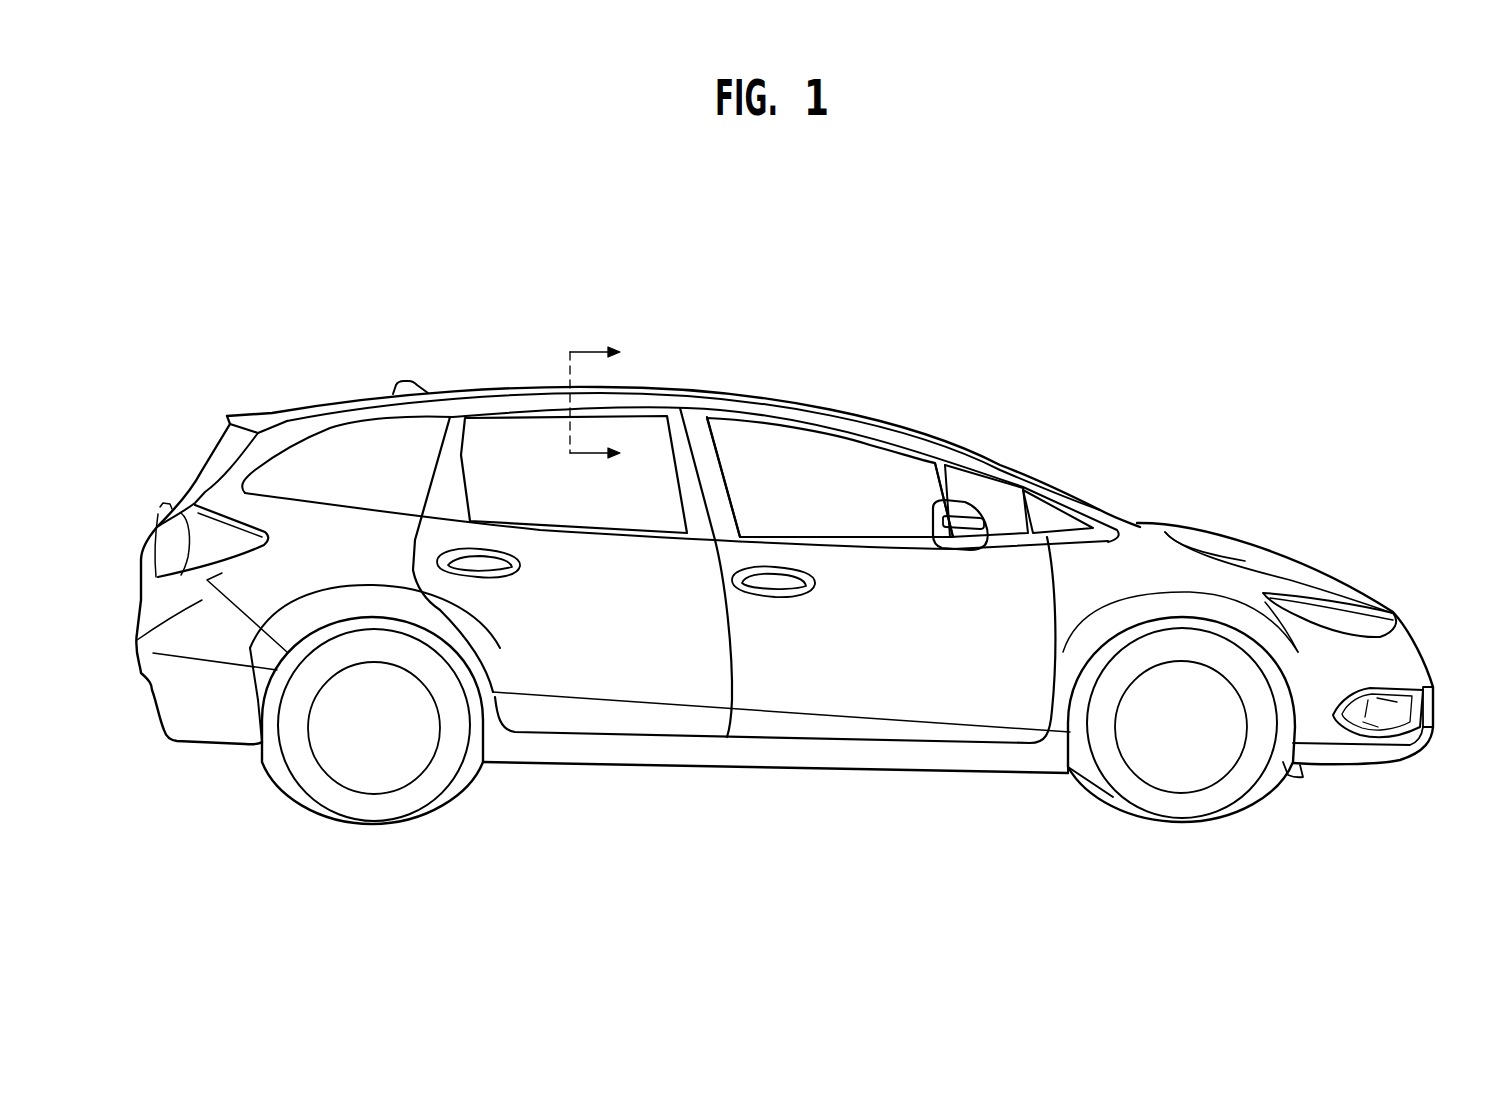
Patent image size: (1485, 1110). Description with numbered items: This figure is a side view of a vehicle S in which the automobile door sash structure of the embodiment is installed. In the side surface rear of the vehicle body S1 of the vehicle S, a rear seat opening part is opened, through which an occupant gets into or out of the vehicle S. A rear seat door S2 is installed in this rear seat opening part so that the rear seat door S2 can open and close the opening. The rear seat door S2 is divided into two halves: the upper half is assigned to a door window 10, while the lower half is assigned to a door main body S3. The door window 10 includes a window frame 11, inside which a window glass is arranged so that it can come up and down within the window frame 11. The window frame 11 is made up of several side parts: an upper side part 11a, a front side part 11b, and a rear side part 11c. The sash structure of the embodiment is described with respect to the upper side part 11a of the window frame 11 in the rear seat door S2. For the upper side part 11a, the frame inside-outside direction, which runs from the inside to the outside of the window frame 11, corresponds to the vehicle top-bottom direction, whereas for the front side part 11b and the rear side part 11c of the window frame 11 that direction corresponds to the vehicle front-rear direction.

The door window 10 is at (481, 408).
The window frame 11 is at (680, 436).
The upper side part of the window frame 11a is at (527, 416).
The front side part of the window frame 11b is at (690, 487).
The rear side part of the window frame 11c is at (447, 477).
The vehicle S is at (784, 587).
The vehicle body S1 is at (1130, 523).
The rear seat door S2 is at (663, 688).
The door main body S3 is at (588, 648).